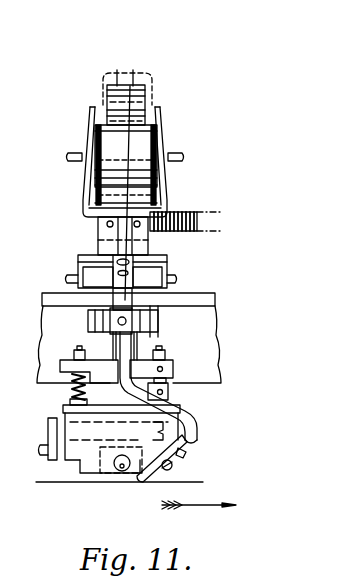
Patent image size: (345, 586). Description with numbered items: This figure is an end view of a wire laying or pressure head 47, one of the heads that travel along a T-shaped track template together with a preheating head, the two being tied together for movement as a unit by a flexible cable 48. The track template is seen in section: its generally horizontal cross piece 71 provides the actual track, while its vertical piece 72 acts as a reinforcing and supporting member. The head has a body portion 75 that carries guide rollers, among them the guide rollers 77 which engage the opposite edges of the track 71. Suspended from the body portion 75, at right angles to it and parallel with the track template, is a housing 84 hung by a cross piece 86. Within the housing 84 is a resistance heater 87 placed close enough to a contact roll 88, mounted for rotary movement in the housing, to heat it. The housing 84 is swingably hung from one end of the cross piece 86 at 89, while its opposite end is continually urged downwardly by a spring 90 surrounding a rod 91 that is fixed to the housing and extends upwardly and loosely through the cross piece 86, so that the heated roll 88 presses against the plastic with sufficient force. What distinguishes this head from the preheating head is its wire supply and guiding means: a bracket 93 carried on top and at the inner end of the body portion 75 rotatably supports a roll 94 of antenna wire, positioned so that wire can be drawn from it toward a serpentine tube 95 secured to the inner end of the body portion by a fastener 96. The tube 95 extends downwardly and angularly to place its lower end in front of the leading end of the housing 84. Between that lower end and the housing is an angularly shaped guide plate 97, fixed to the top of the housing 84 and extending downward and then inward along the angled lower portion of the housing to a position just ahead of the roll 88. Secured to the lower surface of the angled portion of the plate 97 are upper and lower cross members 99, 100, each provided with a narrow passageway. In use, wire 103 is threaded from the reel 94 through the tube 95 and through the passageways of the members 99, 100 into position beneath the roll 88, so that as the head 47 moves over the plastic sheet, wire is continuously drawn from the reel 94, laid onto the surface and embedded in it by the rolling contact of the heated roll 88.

The wire laying head 47 is at (224, 170).
The flexible cable 48 is at (194, 212).
The horizontal cross piece 71 is at (197, 300).
The vertical piece 72 is at (203, 324).
The body portion 75 is at (98, 255).
The guide rollers 77 is at (177, 277).
The housing 84 is at (73, 466).
The cross piece 86 is at (68, 360).
The resistance heater 87 is at (188, 413).
The contact roll 88 is at (120, 475).
The swingable hanging point 89 is at (177, 376).
The spring 90 is at (72, 394).
The rod 91 is at (110, 383).
The bracket 93 is at (167, 186).
The roll of antenna wire 94 is at (160, 127).
The serpentine tube 95 is at (150, 345).
The fastener 96 is at (158, 319).
The guide plate 97 is at (188, 444).
The upper cross member 99 is at (184, 453).
The lower cross member 100 is at (160, 470).
The wire 103 is at (155, 144).